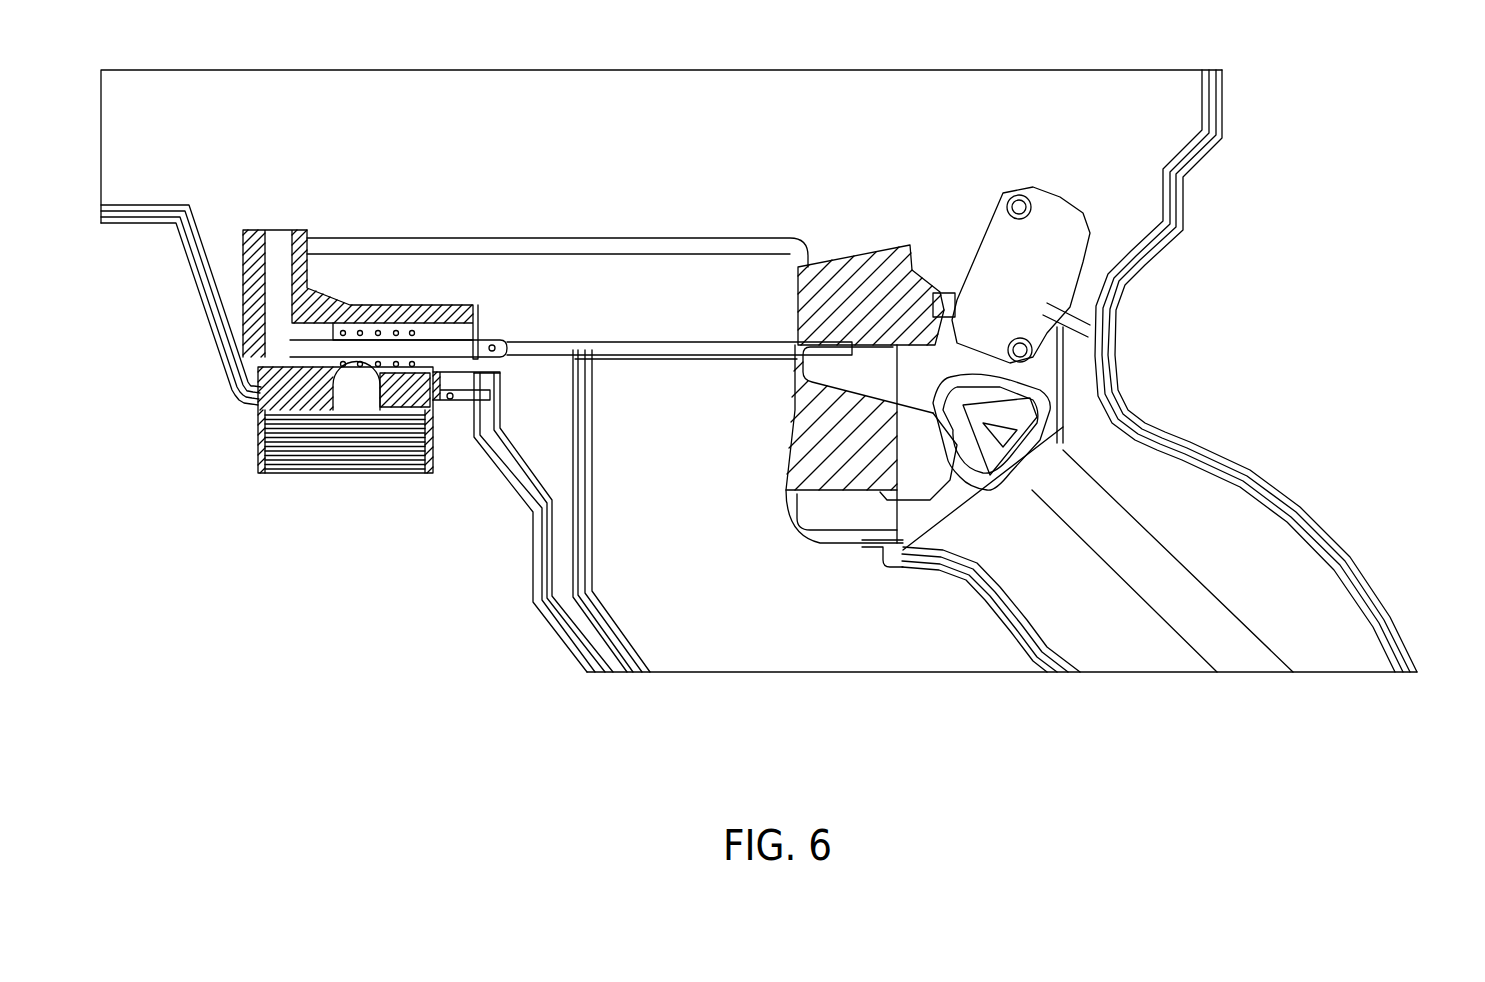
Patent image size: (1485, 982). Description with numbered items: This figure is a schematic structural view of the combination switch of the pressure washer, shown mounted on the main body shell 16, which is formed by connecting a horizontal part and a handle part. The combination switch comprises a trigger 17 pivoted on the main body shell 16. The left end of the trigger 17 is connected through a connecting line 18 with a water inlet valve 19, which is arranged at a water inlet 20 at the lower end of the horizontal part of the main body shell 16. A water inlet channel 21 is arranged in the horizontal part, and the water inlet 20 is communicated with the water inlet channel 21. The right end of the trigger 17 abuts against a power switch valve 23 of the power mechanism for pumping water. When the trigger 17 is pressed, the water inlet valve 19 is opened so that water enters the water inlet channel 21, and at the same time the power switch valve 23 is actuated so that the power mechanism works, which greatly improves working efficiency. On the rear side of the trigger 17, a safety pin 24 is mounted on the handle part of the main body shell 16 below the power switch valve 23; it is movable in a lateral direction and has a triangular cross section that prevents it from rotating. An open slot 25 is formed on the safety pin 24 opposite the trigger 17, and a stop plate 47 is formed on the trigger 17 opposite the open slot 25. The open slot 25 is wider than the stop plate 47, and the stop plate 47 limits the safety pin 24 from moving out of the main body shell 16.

The main body shell 16 is at (1157, 220).
The trigger 17 is at (863, 510).
The connecting line 18 is at (527, 352).
The water inlet valve 19 is at (373, 350).
The water inlet 20 is at (350, 395).
The water inlet channel 21 is at (280, 305).
The power switch valve 23 is at (1040, 266).
The safety pin 24 is at (970, 423).
The open slot 25 is at (1065, 408).
The stop plate 47 is at (967, 448).